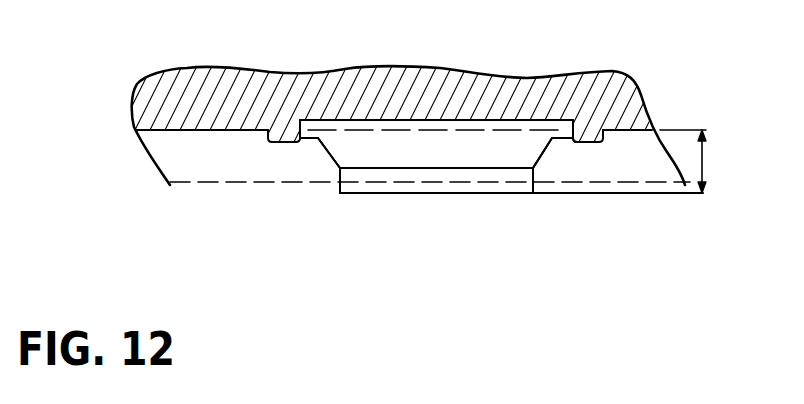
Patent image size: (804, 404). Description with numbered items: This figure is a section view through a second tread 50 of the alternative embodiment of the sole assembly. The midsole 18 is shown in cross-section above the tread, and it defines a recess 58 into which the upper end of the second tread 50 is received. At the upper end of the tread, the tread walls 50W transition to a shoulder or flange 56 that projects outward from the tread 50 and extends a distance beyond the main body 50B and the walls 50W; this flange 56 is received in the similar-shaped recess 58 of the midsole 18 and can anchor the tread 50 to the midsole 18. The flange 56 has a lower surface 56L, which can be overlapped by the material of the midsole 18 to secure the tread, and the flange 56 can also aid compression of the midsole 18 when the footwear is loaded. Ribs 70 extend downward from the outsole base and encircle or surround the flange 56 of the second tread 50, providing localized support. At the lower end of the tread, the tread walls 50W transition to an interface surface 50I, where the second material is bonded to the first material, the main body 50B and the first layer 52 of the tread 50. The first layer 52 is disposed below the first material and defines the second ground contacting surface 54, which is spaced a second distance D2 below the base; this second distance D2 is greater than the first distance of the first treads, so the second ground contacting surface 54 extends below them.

The midsole 18 is at (333, 108).
The flange 56 is at (312, 125).
The lower surface of the flange 56L is at (565, 142).
The recess 58 is at (435, 120).
The ribs 70 is at (288, 142).
The second tread 50 is at (545, 160).
The interface surface 50I is at (467, 168).
The tread walls 50W is at (322, 162).
The main body 50B is at (428, 150).
The first layer 52 is at (393, 193).
The second ground contacting surface 54 is at (450, 197).
The second distance D2 is at (707, 162).